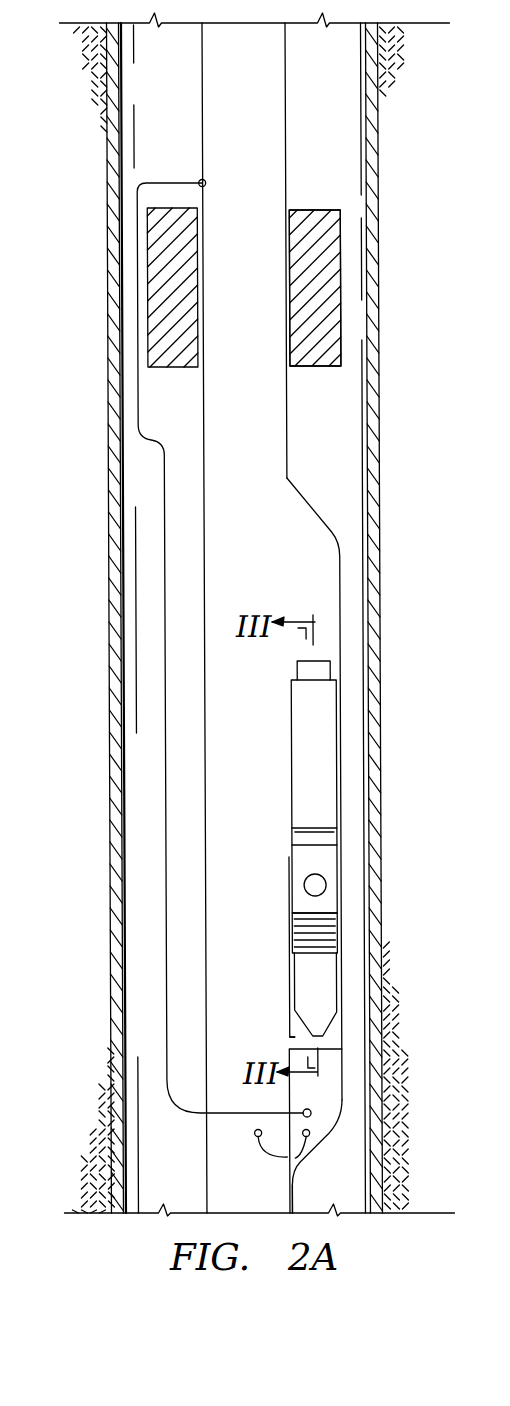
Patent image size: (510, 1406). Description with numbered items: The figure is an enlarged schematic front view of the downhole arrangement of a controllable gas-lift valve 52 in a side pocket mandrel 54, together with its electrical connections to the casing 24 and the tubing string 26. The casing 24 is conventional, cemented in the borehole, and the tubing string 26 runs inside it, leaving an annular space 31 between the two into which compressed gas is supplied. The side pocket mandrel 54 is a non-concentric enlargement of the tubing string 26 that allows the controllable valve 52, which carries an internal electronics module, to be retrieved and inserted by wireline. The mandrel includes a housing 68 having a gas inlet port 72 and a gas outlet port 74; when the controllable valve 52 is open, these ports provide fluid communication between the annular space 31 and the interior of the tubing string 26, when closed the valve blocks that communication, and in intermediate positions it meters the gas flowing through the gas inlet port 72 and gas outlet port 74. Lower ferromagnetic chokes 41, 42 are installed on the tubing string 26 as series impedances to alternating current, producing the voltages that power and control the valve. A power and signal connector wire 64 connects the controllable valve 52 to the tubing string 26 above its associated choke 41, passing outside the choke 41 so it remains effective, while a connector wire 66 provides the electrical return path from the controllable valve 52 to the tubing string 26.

The casing 24 is at (380, 105).
The tubing string 26 is at (288, 62).
The annular space 31 is at (335, 1157).
The lower ferromagnetic choke 41 is at (342, 320).
The lower ferromagnetic choke 42 is at (320, 307).
The controllable valve 52 is at (323, 805).
The side pocket mandrel 54 is at (340, 605).
The power and signal connector wire 64 is at (166, 483).
The connector wire 66 is at (250, 1152).
The housing 68 is at (305, 504).
The gas inlet port 72 is at (343, 886).
The gas outlet port 74 is at (284, 1042).